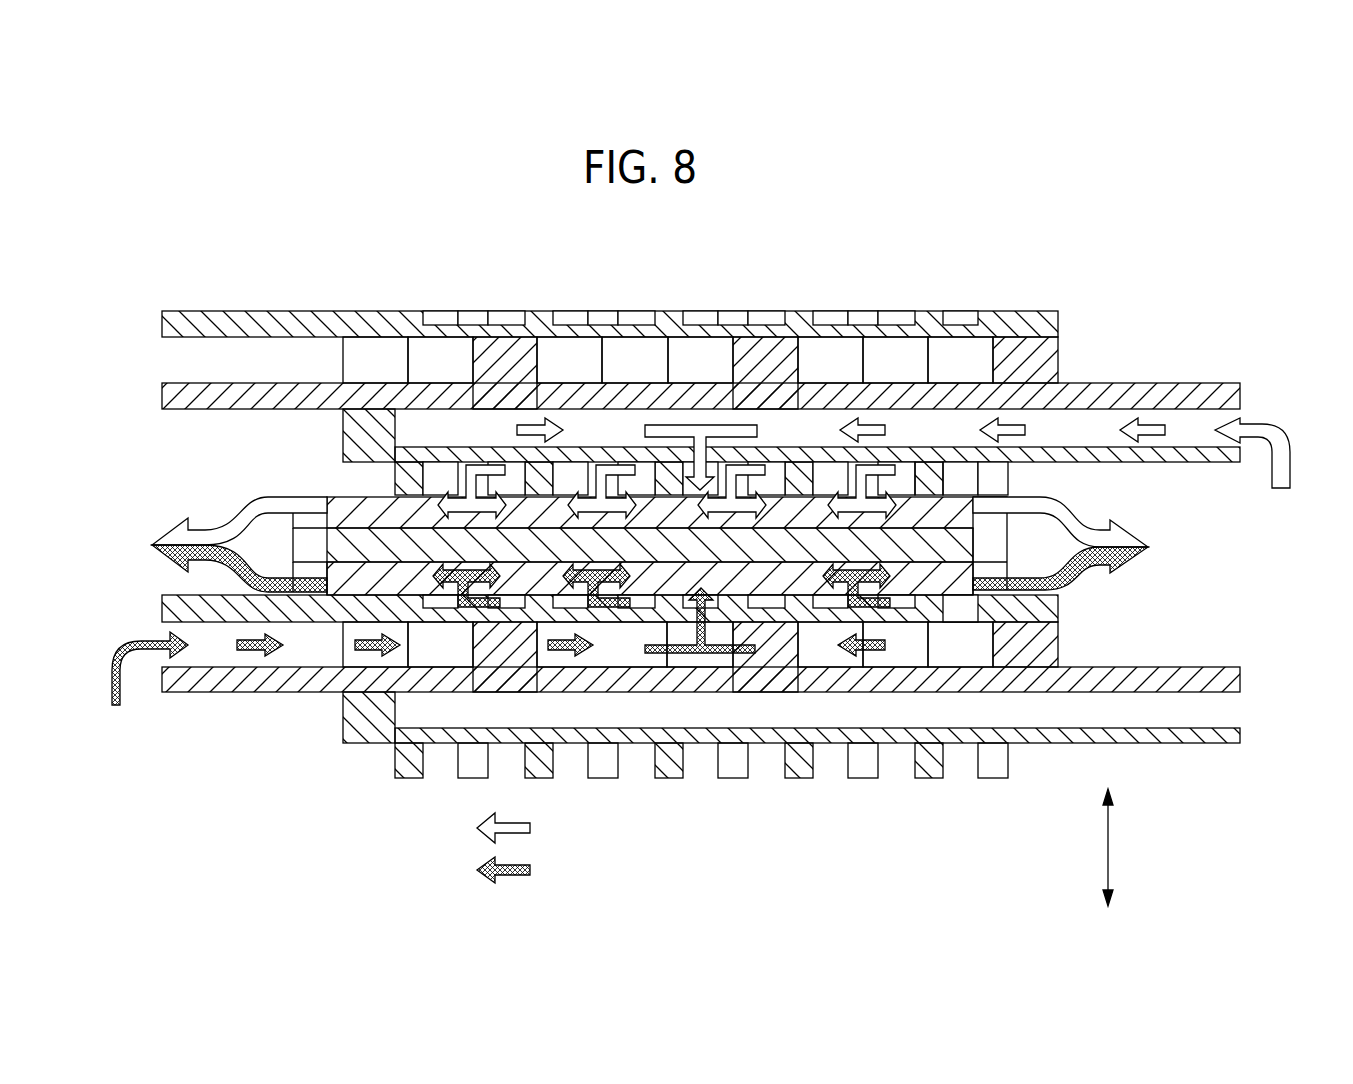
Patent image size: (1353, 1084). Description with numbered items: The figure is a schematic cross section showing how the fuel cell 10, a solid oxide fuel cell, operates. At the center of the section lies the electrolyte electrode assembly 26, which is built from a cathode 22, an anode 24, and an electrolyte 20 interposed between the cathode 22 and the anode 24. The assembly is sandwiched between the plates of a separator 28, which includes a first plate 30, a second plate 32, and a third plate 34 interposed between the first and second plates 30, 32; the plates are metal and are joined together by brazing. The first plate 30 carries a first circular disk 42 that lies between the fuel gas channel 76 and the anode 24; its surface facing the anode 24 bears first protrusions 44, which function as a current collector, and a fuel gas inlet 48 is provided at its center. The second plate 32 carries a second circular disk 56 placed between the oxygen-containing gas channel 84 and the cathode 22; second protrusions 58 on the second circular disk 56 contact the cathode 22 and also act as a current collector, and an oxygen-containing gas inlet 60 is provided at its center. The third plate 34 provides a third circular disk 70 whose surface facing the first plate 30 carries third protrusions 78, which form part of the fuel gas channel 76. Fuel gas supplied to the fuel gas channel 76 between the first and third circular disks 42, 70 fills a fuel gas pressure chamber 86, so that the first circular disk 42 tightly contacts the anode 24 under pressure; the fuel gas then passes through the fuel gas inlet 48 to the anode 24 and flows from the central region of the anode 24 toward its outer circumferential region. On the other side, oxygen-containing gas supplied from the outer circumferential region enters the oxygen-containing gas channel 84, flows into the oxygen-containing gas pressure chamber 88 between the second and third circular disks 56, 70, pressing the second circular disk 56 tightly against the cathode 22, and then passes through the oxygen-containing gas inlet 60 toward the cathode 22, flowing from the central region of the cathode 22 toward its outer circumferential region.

The fuel cell 10 is at (990, 230).
The electrolyte 20 is at (325, 548).
The cathode 22 is at (336, 510).
The anode 24 is at (357, 585).
The electrolyte electrode assembly 26 is at (1020, 500).
The separator 28 is at (373, 208).
The first plate 30 is at (309, 308).
The second plate 32 is at (410, 436).
The third plate 34 is at (355, 368).
The first circular disk 42 is at (815, 330).
The first protrusions 44 is at (457, 606).
The fuel gas inlet 48 is at (690, 624).
The second circular disk 56 is at (452, 453).
The second protrusions 58 is at (930, 480).
The oxygen-containing gas inlet 60 is at (712, 452).
The third circular disk 70 is at (697, 397).
The fuel gas channel 76 is at (215, 657).
The third protrusions 78 is at (510, 642).
The oxygen-containing gas channel 84 is at (1186, 435).
The fuel gas pressure chamber 86 is at (963, 650).
The oxygen-containing gas pressure chamber 88 is at (583, 433).